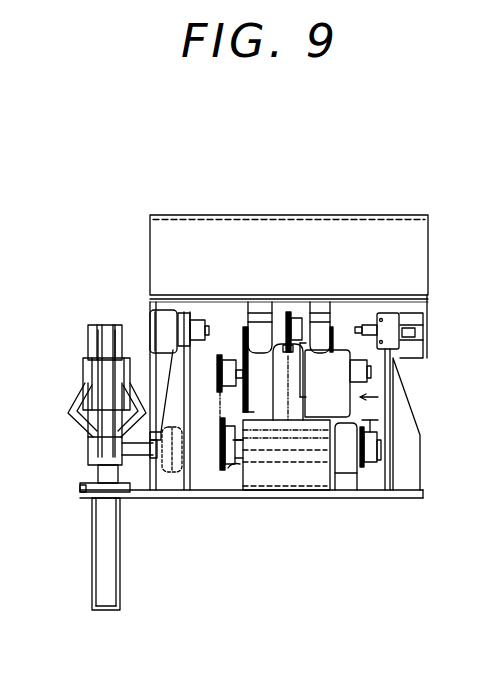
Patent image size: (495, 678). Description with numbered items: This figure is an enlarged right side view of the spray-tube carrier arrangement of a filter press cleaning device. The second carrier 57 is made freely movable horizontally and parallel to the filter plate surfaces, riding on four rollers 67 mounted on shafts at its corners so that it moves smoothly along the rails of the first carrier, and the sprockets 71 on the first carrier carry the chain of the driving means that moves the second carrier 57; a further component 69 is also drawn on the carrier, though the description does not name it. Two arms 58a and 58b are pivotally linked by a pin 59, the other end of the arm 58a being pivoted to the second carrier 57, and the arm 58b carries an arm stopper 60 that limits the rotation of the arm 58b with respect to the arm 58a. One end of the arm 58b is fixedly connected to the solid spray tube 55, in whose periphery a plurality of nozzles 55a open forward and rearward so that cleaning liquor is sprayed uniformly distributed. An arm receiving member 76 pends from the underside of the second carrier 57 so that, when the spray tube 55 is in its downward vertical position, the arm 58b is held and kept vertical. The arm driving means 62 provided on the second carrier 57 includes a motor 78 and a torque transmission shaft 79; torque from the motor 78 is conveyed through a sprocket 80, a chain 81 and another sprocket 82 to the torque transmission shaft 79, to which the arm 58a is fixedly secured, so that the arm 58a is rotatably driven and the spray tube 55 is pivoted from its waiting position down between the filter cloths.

The spray tube 55 is at (90, 471).
The nozzles 55a is at (82, 492).
The second carrier 57 is at (428, 431).
The arm 58a is at (107, 421).
The arm 58b is at (93, 351).
The pin 59 is at (126, 331).
The arm stopper 60 is at (100, 373).
The arm driving means 62 is at (393, 392).
The rollers 67 is at (165, 320).
The limit switch 69 is at (413, 333).
The sprockets 71 is at (287, 314).
The arm receiving member 76 is at (108, 557).
The motor 78 is at (393, 416).
The torque transmission shaft 79 is at (212, 440).
The sprocket 80 is at (219, 370).
The chain 81 is at (224, 462).
The sprocket 82 is at (228, 468).